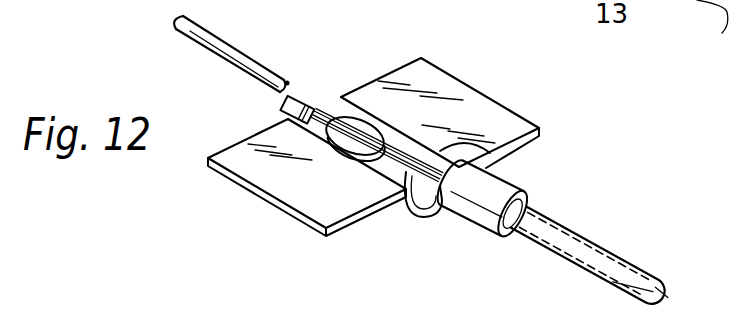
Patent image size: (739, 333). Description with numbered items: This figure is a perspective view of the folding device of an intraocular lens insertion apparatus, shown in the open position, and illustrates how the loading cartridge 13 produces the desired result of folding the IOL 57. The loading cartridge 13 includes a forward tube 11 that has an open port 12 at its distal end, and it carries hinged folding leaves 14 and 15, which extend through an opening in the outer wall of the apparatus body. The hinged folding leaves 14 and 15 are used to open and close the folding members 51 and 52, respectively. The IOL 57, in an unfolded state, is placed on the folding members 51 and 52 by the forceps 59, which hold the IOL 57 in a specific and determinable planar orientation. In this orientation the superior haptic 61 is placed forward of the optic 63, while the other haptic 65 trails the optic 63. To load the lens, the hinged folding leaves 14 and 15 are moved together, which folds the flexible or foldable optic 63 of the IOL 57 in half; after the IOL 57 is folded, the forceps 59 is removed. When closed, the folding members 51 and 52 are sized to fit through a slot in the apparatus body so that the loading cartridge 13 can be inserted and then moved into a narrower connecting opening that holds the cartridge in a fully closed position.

The forward tube 11 is at (624, 261).
The open port 12 is at (708, 32).
The loading cartridge 13 is at (578, 137).
The folding leaf 14 is at (490, 108).
The folding leaf 15 is at (282, 184).
The folding member 51 is at (412, 147).
The folding member 52 is at (423, 218).
The IOL 57 is at (336, 142).
The forceps 59 is at (311, 102).
The superior haptic 61 is at (492, 151).
The optic 63 is at (349, 147).
The haptic 65 is at (279, 108).